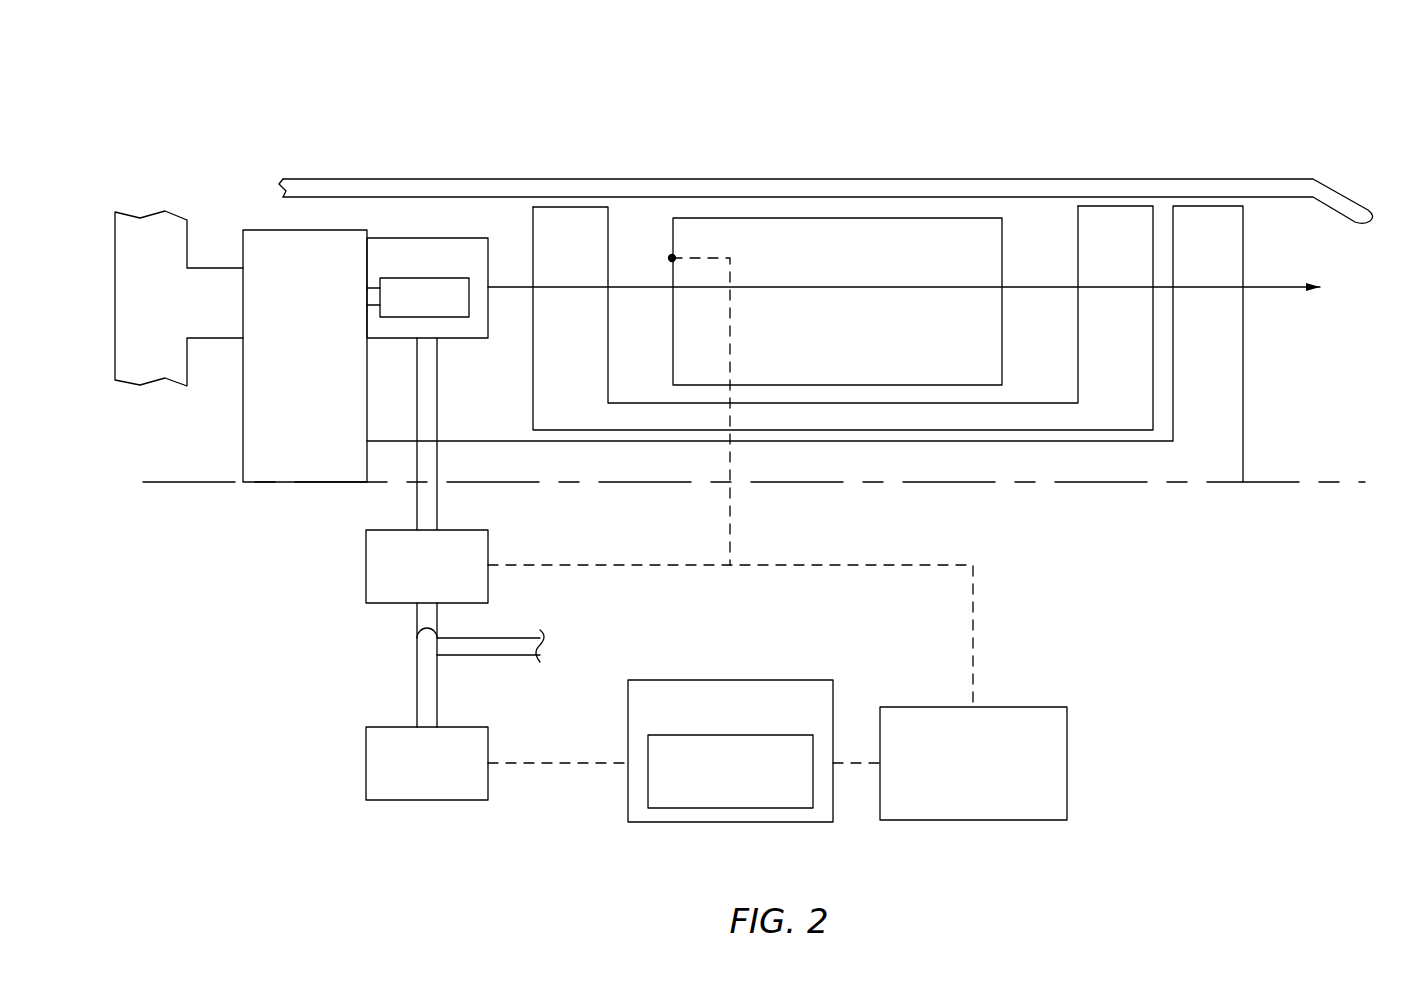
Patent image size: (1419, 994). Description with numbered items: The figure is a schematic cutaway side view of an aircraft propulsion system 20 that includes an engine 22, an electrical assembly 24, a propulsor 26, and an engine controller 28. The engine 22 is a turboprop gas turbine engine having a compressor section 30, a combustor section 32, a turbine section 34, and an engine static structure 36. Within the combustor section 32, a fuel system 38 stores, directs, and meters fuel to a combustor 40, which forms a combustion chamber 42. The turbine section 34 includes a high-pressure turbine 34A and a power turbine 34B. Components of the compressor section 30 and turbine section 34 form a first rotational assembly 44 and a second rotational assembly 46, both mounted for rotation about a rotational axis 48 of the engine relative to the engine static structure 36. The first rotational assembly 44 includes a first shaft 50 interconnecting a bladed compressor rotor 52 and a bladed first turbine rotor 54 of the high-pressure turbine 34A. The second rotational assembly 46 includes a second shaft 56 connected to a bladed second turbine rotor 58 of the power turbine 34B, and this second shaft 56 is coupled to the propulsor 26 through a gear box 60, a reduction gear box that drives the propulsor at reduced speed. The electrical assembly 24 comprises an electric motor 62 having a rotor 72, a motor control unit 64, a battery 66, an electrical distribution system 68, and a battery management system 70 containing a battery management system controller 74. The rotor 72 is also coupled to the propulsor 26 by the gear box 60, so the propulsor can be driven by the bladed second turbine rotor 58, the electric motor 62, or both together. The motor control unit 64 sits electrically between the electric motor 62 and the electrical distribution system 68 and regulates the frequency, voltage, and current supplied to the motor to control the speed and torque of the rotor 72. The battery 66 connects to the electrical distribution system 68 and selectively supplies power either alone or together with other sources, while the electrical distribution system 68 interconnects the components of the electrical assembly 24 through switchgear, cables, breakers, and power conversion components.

The propulsion system 20 is at (1229, 75).
The engine 22 is at (1025, 176).
The electrical assembly 24 is at (453, 818).
The propulsor 26 is at (113, 318).
The engine controller 28 is at (959, 804).
The compressor section 30 is at (628, 213).
The combustor section 32 is at (861, 207).
The turbine section 34 is at (1203, 201).
The high-pressure turbine 34A is at (1115, 414).
The power turbine 34B is at (1224, 447).
The engine static structure 36 is at (906, 192).
The fuel system 38 is at (673, 257).
The combustor 40 is at (778, 218).
The combustion chamber 42 is at (826, 272).
The first rotational assembly 44 is at (940, 416).
The second rotational assembly 46 is at (698, 464).
The rotational axis 48 is at (1360, 480).
The first shaft 50 is at (768, 418).
The bladed compressor rotor 52 is at (552, 261).
The bladed first turbine rotor 54 is at (1102, 260).
The second shaft 56 is at (531, 472).
The bladed second turbine rotor 58 is at (1195, 260).
The gear box 60 is at (290, 366).
The electric motor 62 is at (425, 237).
The motor control unit 64 is at (413, 596).
The battery 66 is at (366, 757).
The electrical distribution system 68 is at (447, 683).
The battery management system 70 is at (780, 680).
The rotor 72 is at (410, 311).
The battery management system controller 74 is at (717, 808).